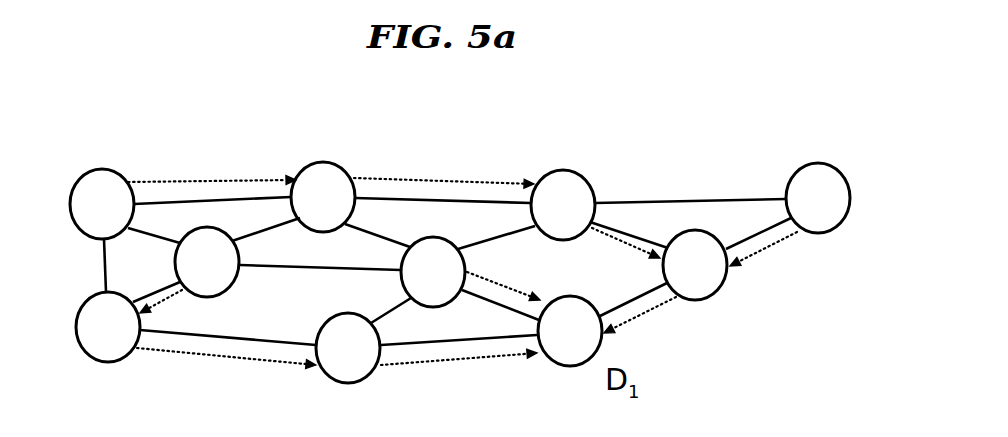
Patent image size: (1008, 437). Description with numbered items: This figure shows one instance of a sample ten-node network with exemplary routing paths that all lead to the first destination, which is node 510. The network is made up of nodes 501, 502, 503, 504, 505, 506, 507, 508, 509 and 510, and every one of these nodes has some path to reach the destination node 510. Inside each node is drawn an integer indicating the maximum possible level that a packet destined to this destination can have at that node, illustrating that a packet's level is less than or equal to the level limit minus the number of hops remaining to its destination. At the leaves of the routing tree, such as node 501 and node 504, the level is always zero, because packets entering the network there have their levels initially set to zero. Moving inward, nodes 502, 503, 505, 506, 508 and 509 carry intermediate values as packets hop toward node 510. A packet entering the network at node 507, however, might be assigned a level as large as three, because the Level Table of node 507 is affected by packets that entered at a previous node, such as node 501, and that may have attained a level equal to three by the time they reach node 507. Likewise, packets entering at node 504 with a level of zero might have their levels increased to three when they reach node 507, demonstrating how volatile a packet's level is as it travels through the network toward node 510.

The node 501 is at (111, 170).
The node 502 is at (335, 164).
The node 503 is at (583, 172).
The node 504 is at (826, 164).
The node 505 is at (228, 291).
The node 506 is at (467, 265).
The node 507 is at (726, 287).
The node 508 is at (108, 362).
The node 509 is at (332, 381).
The node 510 is at (565, 366).